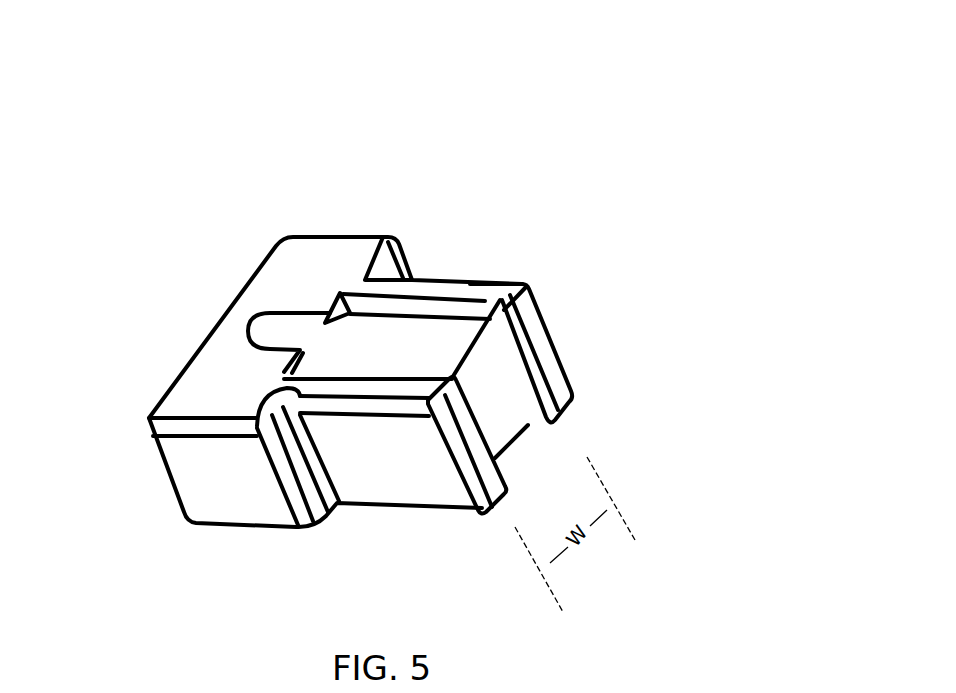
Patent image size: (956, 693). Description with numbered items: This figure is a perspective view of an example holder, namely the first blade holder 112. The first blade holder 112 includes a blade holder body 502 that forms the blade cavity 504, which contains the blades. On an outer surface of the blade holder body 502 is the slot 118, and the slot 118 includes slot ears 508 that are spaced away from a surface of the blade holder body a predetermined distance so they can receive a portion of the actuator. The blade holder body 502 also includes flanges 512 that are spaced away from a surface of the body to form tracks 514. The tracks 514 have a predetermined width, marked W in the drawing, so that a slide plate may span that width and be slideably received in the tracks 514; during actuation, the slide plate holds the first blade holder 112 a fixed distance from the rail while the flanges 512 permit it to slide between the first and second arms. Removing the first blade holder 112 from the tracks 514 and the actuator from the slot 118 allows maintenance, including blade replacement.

The first blade holder 112 is at (349, 333).
The slot 118 is at (296, 332).
The blade holder body 502 is at (440, 243).
The blade cavity 504 is at (160, 315).
The slot ears 508 is at (308, 362).
The flanges 512 is at (530, 350).
The tracks 514 is at (494, 282).